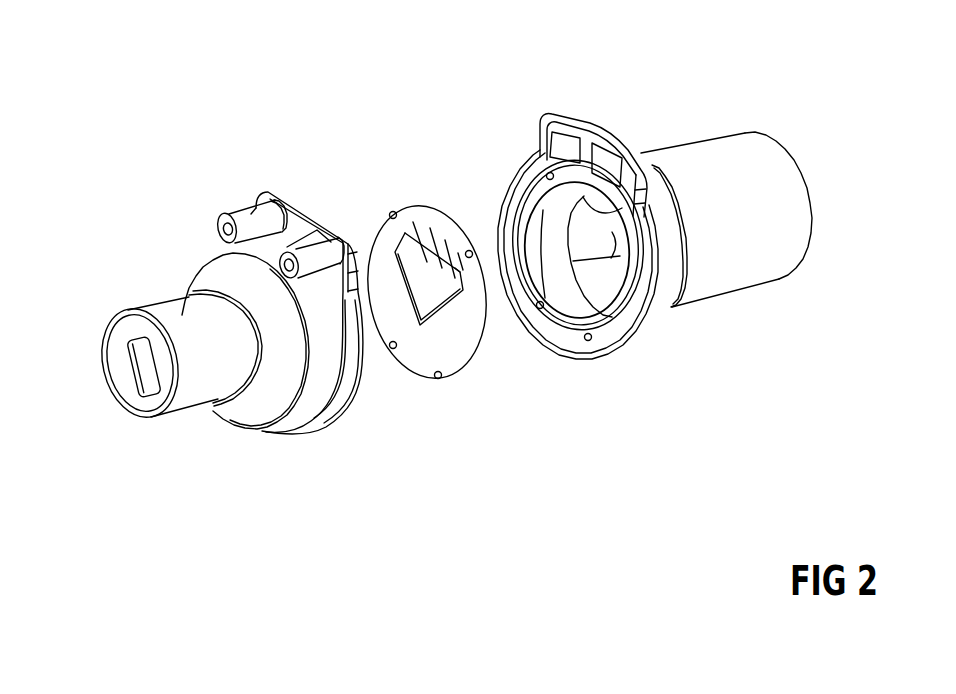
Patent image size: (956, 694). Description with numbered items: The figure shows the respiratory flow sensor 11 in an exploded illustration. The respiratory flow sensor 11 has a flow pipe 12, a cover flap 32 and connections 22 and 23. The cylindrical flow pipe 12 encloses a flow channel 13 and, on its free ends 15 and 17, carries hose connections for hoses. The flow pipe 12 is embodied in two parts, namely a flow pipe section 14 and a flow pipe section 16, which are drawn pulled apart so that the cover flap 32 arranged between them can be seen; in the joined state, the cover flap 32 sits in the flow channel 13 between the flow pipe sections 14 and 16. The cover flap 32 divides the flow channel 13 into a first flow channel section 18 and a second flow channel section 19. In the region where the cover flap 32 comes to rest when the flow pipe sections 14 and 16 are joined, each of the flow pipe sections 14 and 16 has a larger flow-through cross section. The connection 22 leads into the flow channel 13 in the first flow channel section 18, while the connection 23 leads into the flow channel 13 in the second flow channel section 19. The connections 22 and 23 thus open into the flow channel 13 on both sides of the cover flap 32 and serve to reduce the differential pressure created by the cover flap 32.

The respiratory flow sensor 11 is at (175, 138).
The flow pipe 12 is at (602, 98).
The flow channel 13 is at (128, 373).
The flow pipe section 14 is at (213, 278).
The free end 15 is at (112, 323).
The flow pipe section 16 is at (663, 305).
The free end 17 is at (795, 160).
The first flow channel section 18 is at (157, 378).
The second flow channel section 19 is at (598, 310).
The connection 22 is at (250, 212).
The connection 23 is at (321, 253).
The cover flap 32 is at (457, 355).